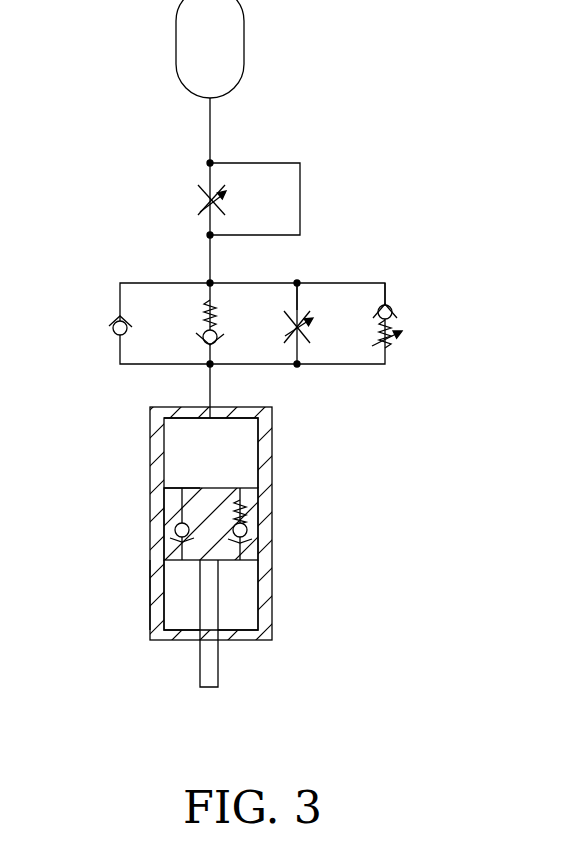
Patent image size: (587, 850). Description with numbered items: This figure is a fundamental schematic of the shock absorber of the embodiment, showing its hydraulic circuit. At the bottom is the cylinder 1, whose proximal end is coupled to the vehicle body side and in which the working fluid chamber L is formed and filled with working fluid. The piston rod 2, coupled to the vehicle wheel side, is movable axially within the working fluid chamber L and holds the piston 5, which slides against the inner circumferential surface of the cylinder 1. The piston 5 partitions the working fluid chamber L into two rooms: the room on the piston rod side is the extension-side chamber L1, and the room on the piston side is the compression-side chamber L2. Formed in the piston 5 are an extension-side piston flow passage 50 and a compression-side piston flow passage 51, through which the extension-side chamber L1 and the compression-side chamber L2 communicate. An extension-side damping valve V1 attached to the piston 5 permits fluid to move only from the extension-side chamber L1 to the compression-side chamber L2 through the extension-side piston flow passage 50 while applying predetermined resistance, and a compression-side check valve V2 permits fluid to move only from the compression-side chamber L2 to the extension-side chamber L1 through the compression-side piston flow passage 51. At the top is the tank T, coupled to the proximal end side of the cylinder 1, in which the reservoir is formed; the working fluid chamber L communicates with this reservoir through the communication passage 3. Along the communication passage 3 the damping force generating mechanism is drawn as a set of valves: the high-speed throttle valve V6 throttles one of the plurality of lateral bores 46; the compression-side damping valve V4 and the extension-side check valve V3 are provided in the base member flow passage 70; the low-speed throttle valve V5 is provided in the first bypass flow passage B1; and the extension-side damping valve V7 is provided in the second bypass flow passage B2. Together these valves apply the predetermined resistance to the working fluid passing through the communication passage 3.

The tank T is at (244, 33).
The communication passage 3 is at (211, 128).
The lateral bore 46 is at (208, 173).
The high-speed throttle valve V6 is at (200, 194).
The base member flow passage 70 is at (118, 298).
The extension-side check valve V3 is at (115, 337).
The compression-side damping valve V4 is at (200, 347).
The low-speed throttle valve V5 is at (303, 334).
The extension-side damping valve V7 is at (405, 338).
The first bypass flow passage B1 is at (300, 302).
The second bypass flow passage B2 is at (388, 291).
The cylinder 1 is at (270, 587).
The piston 5 is at (160, 585).
The compression-side chamber L2 is at (240, 452).
The extension-side piston flow passage 50 is at (270, 555).
The compression-side piston flow passage 51 is at (160, 500).
The compression-side check valve V2 is at (170, 535).
The extension-side damping valve V1 is at (252, 533).
The piston rod 2 is at (203, 668).
The working fluid chamber L is at (157, 607).
The extension-side chamber L1 is at (272, 637).